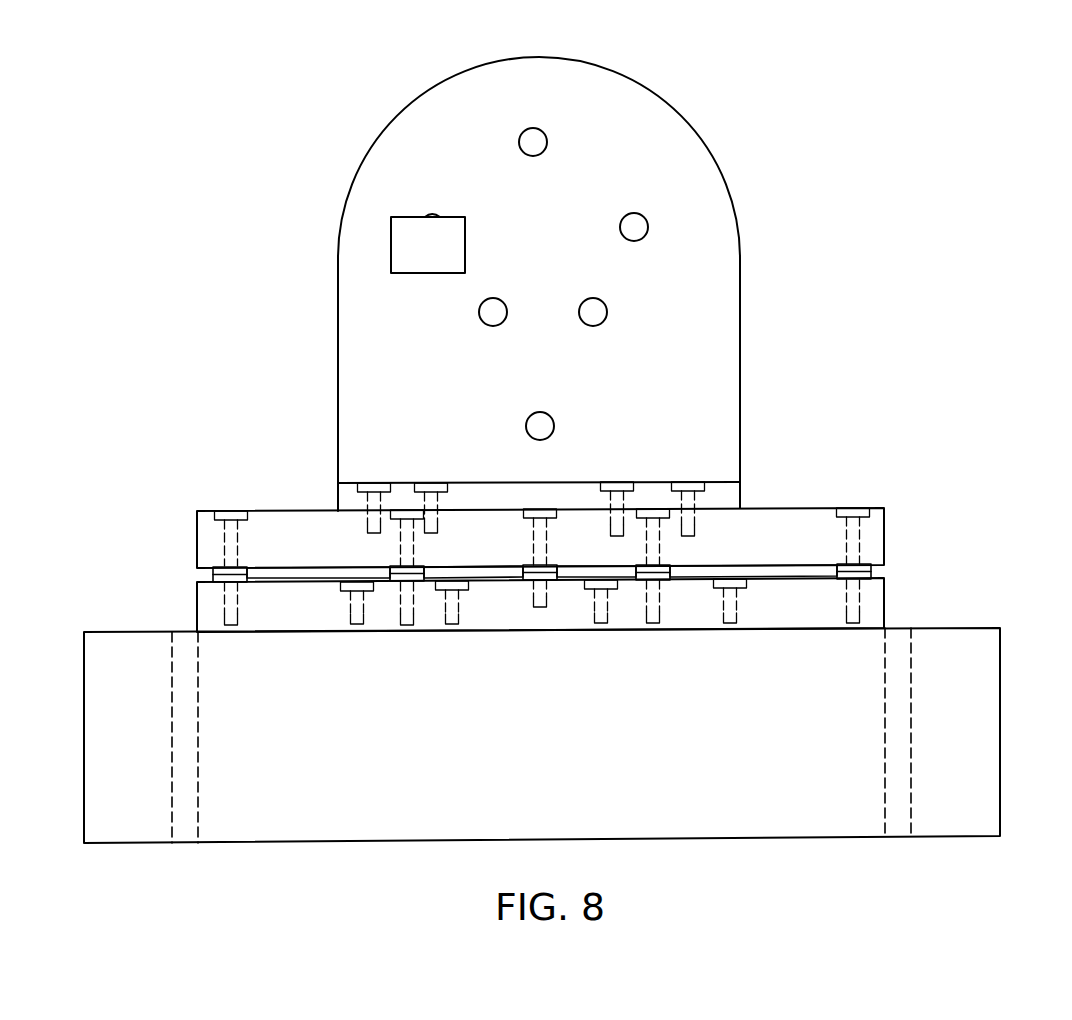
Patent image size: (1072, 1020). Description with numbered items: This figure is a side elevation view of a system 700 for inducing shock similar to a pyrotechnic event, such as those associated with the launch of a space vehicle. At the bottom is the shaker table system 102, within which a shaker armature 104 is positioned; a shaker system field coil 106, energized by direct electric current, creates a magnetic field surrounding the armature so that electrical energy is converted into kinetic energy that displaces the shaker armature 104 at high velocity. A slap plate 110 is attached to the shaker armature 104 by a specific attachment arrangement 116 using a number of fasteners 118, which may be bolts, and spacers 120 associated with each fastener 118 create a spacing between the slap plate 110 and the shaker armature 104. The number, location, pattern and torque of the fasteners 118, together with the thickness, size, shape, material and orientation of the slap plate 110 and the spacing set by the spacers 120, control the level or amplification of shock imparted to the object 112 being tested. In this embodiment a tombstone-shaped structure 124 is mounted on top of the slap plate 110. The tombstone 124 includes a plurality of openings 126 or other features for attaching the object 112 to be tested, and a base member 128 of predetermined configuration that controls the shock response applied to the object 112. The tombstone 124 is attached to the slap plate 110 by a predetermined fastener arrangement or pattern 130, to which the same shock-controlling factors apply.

The system for inducing shock 700 is at (575, 450).
The shaker table system 102 is at (1000, 714).
The shaker armature 104 is at (885, 604).
The shaker system field coil 106 is at (993, 666).
The slap plate 110 is at (885, 523).
The object 112 is at (465, 243).
The specific attachment arrangement 116 is at (225, 516).
The fasteners 118 is at (240, 552).
The spacers 120 is at (872, 577).
The tombstone-shaped structure 124 is at (741, 212).
The openings 126 is at (547, 141).
The base member 128 is at (741, 491).
The fastener arrangement or pattern 130 is at (383, 457).